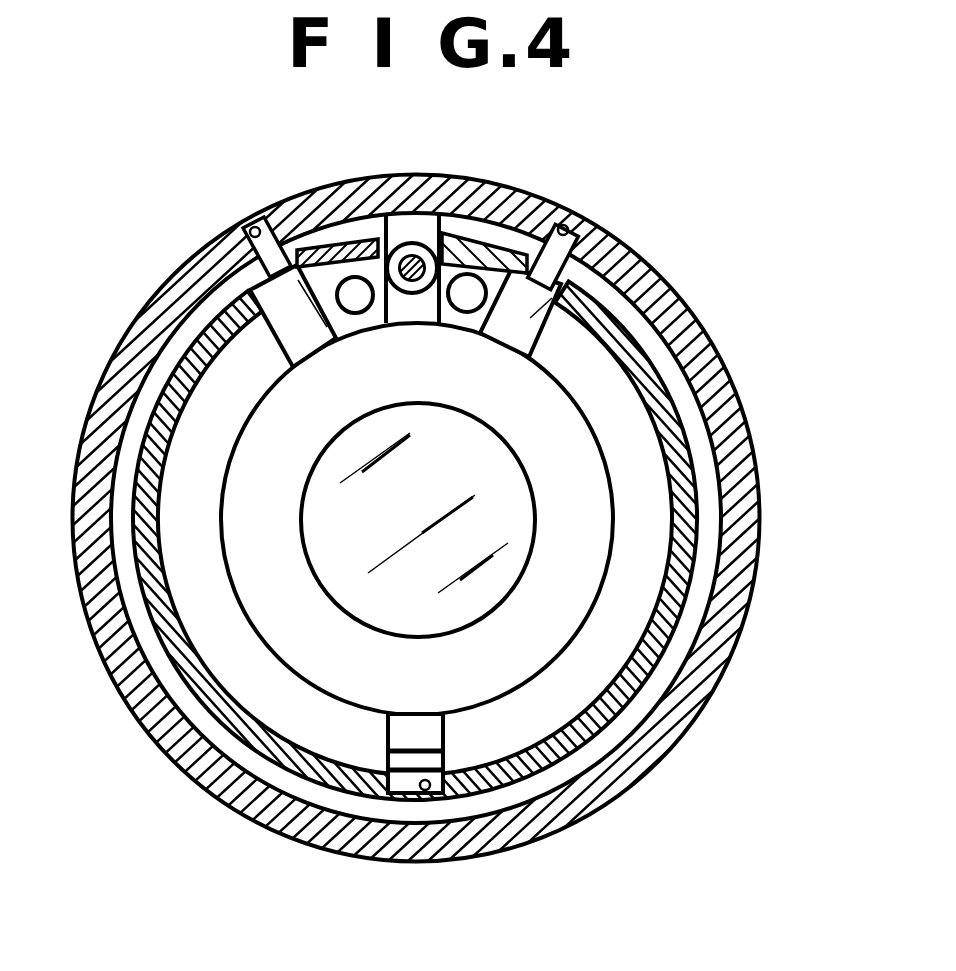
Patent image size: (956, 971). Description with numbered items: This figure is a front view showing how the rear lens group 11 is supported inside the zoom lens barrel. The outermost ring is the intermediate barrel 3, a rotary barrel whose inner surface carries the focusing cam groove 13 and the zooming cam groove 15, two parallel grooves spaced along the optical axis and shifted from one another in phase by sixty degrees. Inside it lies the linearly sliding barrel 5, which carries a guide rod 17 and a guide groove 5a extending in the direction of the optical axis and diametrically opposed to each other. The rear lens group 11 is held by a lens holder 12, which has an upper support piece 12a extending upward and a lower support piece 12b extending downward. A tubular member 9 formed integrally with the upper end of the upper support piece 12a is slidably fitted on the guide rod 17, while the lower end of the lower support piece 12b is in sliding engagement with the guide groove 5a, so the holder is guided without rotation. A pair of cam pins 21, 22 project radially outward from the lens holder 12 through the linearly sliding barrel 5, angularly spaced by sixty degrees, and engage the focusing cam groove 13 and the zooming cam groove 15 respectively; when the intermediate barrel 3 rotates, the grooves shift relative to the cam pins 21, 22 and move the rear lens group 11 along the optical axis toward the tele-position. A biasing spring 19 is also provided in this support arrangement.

The intermediate barrel 3 is at (697, 697).
The linearly sliding barrel 5 is at (684, 600).
The guide groove 5a is at (433, 795).
The tubular member 9 is at (430, 255).
The rear lens group 11 is at (500, 578).
The lens holder 12 is at (533, 645).
The upper support piece 12a is at (402, 318).
The lower support piece 12b is at (428, 732).
The focusing cam groove 13 is at (570, 232).
The zooming cam groove 15 is at (256, 228).
The guide rod 17 is at (403, 250).
The biasing spring 19 is at (500, 242).
The cam pin 21 is at (598, 262).
The cam pin 22 is at (230, 258).